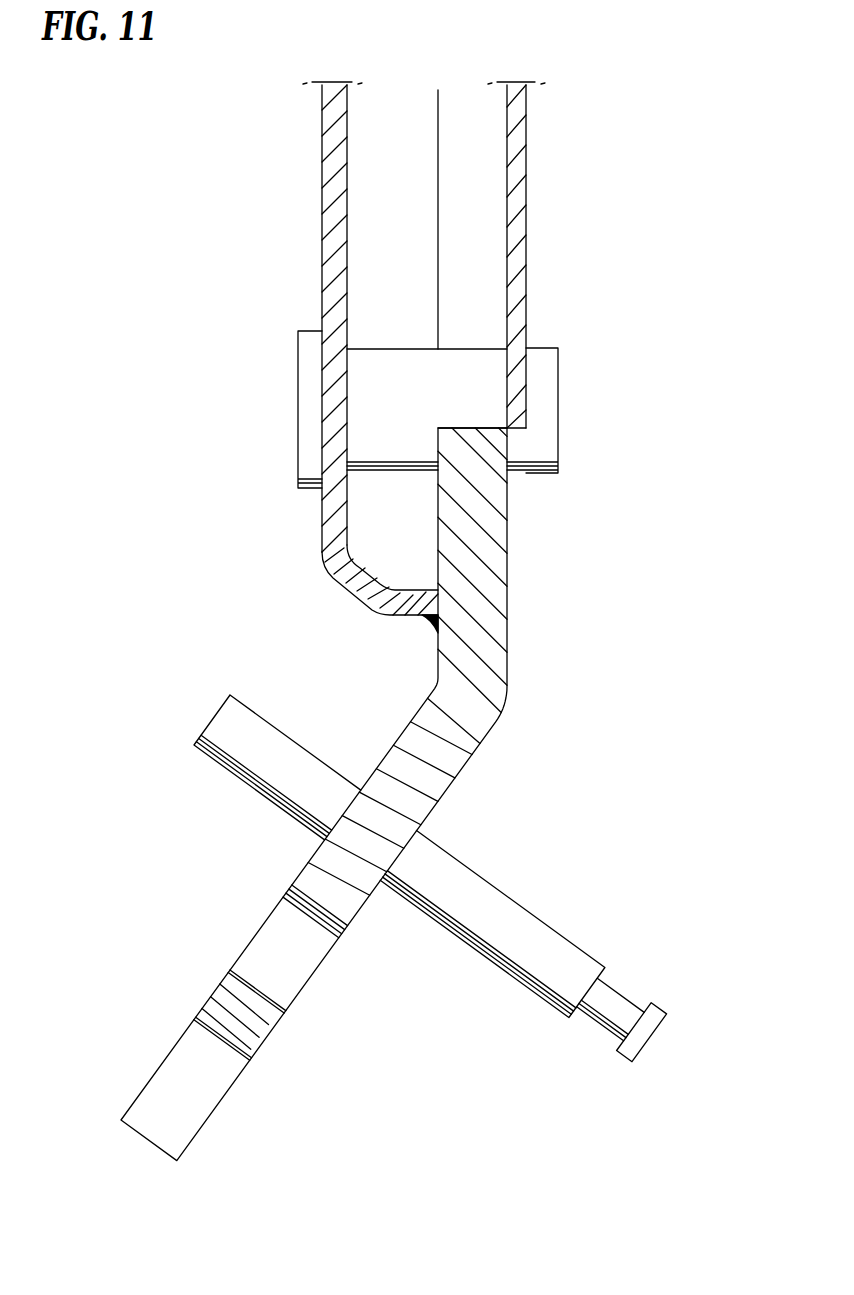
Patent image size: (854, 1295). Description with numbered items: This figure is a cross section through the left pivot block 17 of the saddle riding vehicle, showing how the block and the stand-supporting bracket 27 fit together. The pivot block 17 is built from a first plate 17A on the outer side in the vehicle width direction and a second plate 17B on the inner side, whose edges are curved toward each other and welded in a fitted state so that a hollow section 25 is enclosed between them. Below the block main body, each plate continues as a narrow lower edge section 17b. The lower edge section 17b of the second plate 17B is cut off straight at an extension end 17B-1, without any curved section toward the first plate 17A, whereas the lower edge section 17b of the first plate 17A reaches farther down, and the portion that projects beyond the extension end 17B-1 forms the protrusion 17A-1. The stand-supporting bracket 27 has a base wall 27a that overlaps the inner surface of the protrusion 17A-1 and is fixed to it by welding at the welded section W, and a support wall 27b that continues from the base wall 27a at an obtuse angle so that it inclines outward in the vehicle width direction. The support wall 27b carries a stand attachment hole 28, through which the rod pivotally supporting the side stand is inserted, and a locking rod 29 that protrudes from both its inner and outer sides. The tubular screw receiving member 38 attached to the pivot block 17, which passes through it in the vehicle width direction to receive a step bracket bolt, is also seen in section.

The pivot block 17 is at (437, 348).
The first plate 17A is at (322, 235).
The second plate 17B is at (526, 207).
The protrusion 17A-1 is at (322, 538).
The extension end 17B-1 is at (511, 428).
The lower edge section 17b is at (322, 302).
The hollow section 25 is at (372, 158).
The screw receiving member 38 is at (467, 385).
The stand-supporting bracket 27 is at (373, 794).
The base wall 27a is at (497, 557).
The support wall 27b is at (350, 912).
The stand attachment hole 28 is at (270, 995).
The locking rod 29 is at (567, 936).
The welded section W is at (431, 627).